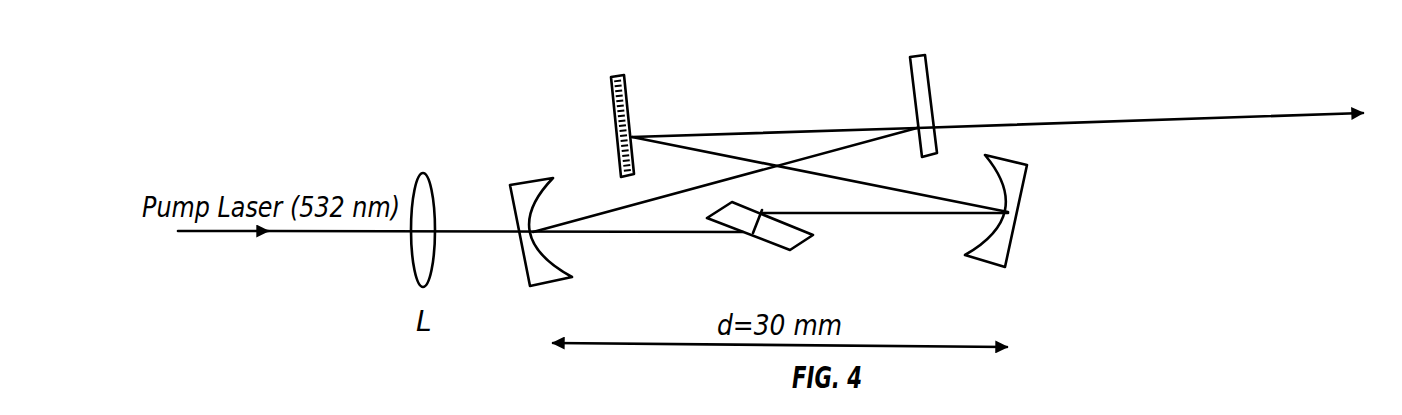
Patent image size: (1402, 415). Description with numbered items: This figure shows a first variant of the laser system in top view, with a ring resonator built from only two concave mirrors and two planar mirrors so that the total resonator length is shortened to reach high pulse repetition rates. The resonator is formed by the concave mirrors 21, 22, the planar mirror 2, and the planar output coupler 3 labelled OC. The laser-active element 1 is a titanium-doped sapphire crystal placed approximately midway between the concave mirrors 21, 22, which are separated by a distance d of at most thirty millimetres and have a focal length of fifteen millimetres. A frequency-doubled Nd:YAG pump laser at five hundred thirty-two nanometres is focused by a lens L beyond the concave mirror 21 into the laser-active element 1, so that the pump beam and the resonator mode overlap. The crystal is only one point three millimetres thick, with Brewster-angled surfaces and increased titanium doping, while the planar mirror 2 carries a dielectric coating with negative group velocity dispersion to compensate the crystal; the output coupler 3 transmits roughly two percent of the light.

The laser-active element 1 is at (771, 188).
The planar mirror 2 is at (609, 70).
The planar output coupler 3 is at (903, 50).
The concave mirror 21 is at (516, 253).
The concave mirror 22 is at (1030, 228).